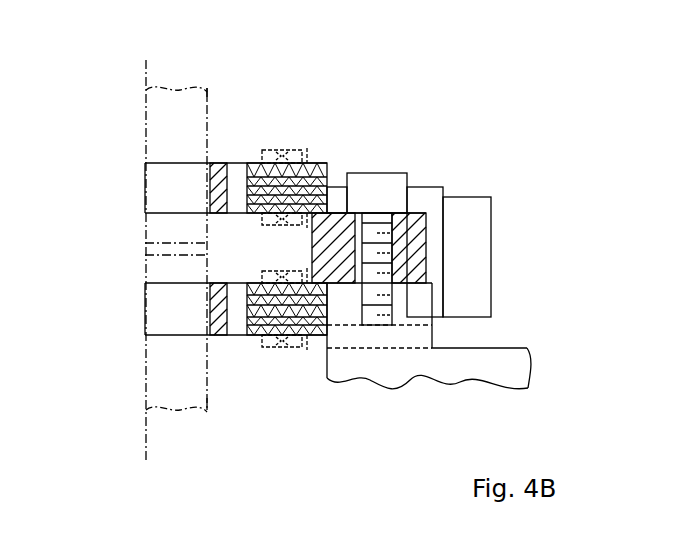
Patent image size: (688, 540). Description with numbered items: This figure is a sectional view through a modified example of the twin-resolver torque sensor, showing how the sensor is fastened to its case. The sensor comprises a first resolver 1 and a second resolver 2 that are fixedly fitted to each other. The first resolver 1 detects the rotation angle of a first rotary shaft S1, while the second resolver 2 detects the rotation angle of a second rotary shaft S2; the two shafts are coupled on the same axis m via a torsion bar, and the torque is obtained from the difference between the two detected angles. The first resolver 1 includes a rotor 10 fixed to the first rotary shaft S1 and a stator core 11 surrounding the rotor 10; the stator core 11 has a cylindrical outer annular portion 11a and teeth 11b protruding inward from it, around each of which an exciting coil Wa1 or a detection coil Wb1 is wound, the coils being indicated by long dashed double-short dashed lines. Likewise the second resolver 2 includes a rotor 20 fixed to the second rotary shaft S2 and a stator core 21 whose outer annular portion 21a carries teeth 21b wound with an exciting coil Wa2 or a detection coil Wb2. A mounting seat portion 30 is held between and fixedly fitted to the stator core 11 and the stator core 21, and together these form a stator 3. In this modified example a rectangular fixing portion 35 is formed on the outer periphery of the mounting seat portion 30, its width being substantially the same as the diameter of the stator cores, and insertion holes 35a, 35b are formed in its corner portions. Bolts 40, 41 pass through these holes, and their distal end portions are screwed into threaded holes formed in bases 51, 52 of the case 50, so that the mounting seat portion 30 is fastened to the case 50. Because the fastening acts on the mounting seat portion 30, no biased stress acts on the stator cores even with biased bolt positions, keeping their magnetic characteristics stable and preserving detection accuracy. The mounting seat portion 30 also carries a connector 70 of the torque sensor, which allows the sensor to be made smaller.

The first resolver 1 is at (163, 162).
The second resolver 2 is at (172, 336).
The stator 3 is at (411, 265).
The rotor 10 is at (230, 162).
The rotor 20 is at (232, 336).
The stator core 11 is at (321, 161).
The stator core 21 is at (315, 342).
The outer annular portion 11a is at (307, 156).
The teeth 11b is at (262, 220).
The outer annular portion 21a is at (298, 348).
The teeth 21b is at (262, 272).
The mounting seat portion 30 is at (429, 246).
The fixing portion 35 is at (415, 200).
The insertion hole 35a is at (333, 286).
The insertion hole 35b is at (394, 287).
The bolt 40 is at (387, 172).
The bolt 41 is at (395, 163).
The case 50 is at (530, 362).
The base 51 is at (444, 335).
The base 52 is at (436, 338).
The connector 70 is at (463, 196).
The axis m is at (145, 68).
The first rotary shaft S1 is at (212, 100).
The second rotary shaft S2 is at (215, 412).
The exciting coil Wa1 is at (276, 148).
The detection coil Wb1 is at (283, 96).
The exciting coil Wa2 is at (266, 349).
The detection coil Wb2 is at (283, 436).